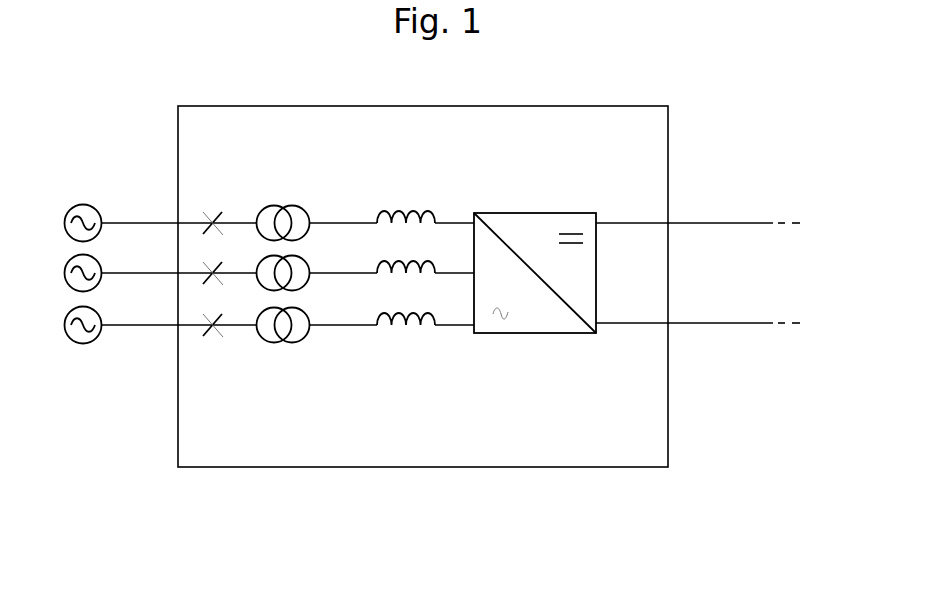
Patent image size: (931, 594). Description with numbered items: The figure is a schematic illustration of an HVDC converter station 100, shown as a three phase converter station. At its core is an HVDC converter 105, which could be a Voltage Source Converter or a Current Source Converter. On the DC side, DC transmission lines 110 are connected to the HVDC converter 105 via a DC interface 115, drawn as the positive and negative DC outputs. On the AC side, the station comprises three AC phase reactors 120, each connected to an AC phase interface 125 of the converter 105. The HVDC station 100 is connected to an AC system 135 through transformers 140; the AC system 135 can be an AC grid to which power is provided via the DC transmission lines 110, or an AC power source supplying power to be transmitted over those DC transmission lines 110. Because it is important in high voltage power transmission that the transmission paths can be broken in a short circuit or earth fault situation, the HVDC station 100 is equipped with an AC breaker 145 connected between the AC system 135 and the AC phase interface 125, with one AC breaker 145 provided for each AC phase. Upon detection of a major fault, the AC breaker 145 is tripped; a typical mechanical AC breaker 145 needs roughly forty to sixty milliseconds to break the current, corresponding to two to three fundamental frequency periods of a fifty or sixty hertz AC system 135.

The HVDC converter station 100 is at (423, 286).
The HVDC converter 105 is at (548, 334).
The DC transmission lines 110 is at (745, 223).
The DC interface 115 is at (598, 213).
The AC phase reactors 120 is at (415, 184).
The AC phase interface 125 is at (470, 212).
The AC system 135 is at (93, 185).
The transformers 140 is at (290, 200).
The AC breaker 145 is at (220, 203).